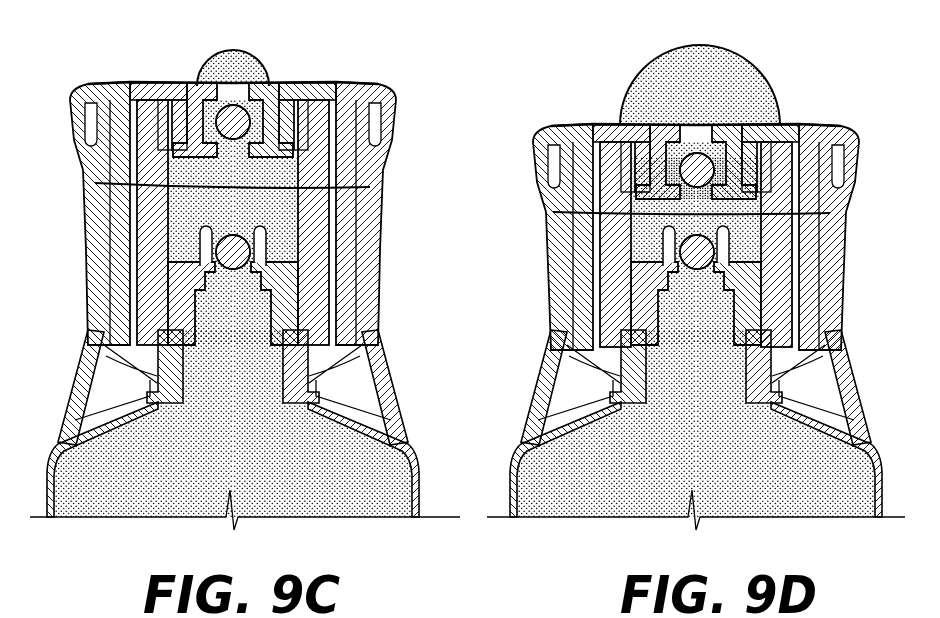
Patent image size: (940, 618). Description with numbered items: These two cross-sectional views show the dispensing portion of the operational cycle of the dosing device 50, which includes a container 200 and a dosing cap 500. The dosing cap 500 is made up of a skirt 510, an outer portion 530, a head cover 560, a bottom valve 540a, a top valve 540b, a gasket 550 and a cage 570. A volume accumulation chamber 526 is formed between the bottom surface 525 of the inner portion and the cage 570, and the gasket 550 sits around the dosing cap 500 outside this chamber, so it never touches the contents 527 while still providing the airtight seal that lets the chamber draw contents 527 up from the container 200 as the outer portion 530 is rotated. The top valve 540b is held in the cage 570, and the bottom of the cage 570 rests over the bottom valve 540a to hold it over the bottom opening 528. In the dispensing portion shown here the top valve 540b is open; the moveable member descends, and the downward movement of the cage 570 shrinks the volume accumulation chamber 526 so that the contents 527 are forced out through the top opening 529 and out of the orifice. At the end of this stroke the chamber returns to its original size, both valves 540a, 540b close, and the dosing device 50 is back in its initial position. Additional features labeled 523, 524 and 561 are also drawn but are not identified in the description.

In FIG. 9C, the dosing device 50 is at (72, 84).
In FIG. 9D, the dosing device 50 is at (512, 102).
In FIG. 9C, the container 200 is at (418, 492).
In FIG. 9D, the container 200 is at (903, 485).
In FIG. 9C, the dosing cap 500 is at (417, 420).
In FIG. 9D, the dosing cap 500 is at (878, 418).
In FIG. 9C, the skirt 510 is at (396, 388).
In FIG. 9D, the skirt 510 is at (870, 388).
In FIG. 9C, the outer wall lip 523 is at (115, 175).
In FIG. 9D, the outer wall lip 523 is at (590, 195).
In FIG. 9C, the inner wall 524 is at (163, 280).
In FIG. 9D, the inner wall 524 is at (633, 235).
In FIG. 9C, the bottom surface 525 is at (140, 305).
In FIG. 9D, the bottom surface 525 is at (627, 272).
In FIG. 9C, the volume accumulation chamber 526 is at (292, 243).
In FIG. 9D, the volume accumulation chamber 526 is at (753, 230).
In FIG. 9C, the contents 527 is at (213, 60).
In FIG. 9D, the contents 527 is at (640, 85).
In FIG. 9C, the bottom opening 528 is at (230, 283).
In FIG. 9D, the bottom opening 528 is at (735, 285).
In FIG. 9C, the top opening 529 is at (240, 158).
In FIG. 9D, the top opening 529 is at (703, 195).
In FIG. 9C, the outer portion 530 is at (390, 190).
In FIG. 9D, the outer portion 530 is at (858, 222).
In FIG. 9C, the bottom valve 540a is at (232, 256).
In FIG. 9D, the bottom valve 540a is at (708, 260).
In FIG. 9C, the top valve 540b is at (234, 124).
In FIG. 9D, the top valve 540b is at (700, 165).
In FIG. 9C, the gasket 550 is at (333, 212).
In FIG. 9D, the gasket 550 is at (800, 252).
In FIG. 9C, the head cover 560 is at (390, 100).
In FIG. 9D, the head cover 560 is at (850, 140).
In FIG. 9C, the cap top wall 561 is at (335, 82).
In FIG. 9D, the cap top wall 561 is at (818, 128).
In FIG. 9C, the cage 570 is at (285, 115).
In FIG. 9D, the cage 570 is at (755, 140).